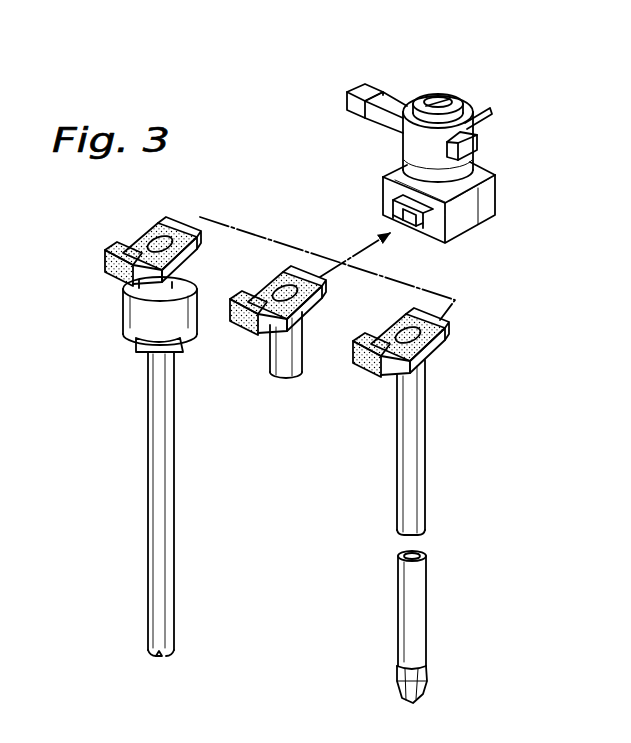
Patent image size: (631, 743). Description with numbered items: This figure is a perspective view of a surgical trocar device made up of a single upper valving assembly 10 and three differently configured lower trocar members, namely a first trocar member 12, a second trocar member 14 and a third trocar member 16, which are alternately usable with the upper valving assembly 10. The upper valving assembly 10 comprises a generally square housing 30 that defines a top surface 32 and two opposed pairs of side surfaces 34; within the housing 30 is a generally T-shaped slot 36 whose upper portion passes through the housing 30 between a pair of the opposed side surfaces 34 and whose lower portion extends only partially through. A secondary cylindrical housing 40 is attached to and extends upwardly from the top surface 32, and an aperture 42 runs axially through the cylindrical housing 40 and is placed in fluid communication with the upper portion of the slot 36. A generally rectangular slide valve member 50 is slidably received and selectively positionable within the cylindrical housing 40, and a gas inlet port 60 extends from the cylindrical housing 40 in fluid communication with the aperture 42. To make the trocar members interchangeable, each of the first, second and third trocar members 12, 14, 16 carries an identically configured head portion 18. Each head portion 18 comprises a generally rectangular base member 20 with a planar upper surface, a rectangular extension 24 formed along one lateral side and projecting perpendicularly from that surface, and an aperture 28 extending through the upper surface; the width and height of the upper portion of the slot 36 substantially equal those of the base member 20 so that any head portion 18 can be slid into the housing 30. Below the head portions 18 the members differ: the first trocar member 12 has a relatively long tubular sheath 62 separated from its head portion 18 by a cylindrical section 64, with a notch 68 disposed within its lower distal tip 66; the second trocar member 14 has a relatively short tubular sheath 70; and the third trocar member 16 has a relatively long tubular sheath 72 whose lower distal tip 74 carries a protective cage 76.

The upper valving assembly 10 is at (514, 97).
The first trocar member 12 is at (117, 348).
The second trocar member 14 is at (252, 362).
The third trocar member 16 is at (462, 445).
The head portion 18 is at (130, 218).
The base member 20 is at (158, 236).
The rectangular extension 24 is at (118, 252).
The aperture 28 is at (176, 231).
The housing 30 is at (495, 192).
The top surface 32 is at (476, 164).
The side surfaces 34 is at (483, 216).
The T-shaped slot 36 is at (413, 226).
The secondary cylindrical housing 40 is at (447, 105).
The aperture 42 is at (444, 100).
The slide valve member 50 is at (388, 108).
The gas inlet port 60 is at (483, 123).
The tubular sheath 62 is at (158, 503).
The cylindrical section 64 is at (134, 306).
The distal tip 66 is at (176, 640).
The notch 68 is at (158, 650).
The tubular sheath 70 is at (288, 365).
The tubular sheath 72 is at (415, 500).
The distal tip 74 is at (425, 655).
The protective cage 76 is at (430, 681).